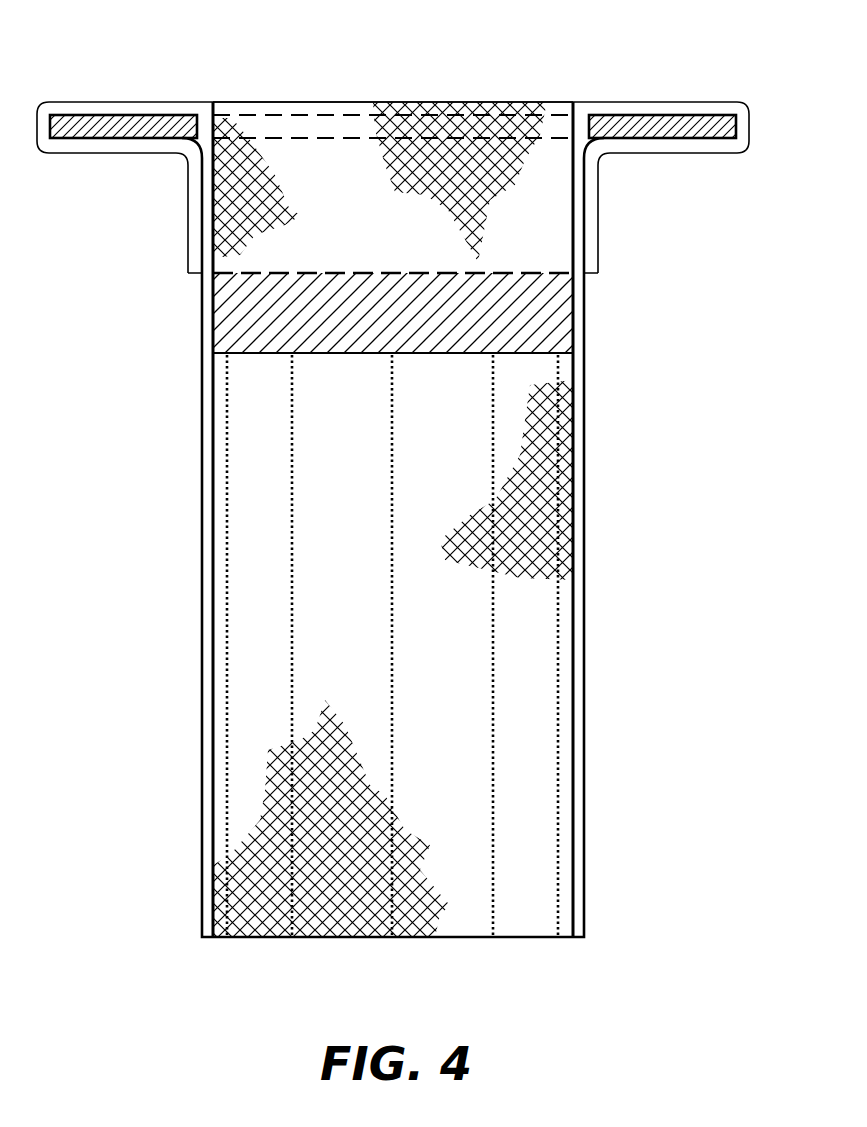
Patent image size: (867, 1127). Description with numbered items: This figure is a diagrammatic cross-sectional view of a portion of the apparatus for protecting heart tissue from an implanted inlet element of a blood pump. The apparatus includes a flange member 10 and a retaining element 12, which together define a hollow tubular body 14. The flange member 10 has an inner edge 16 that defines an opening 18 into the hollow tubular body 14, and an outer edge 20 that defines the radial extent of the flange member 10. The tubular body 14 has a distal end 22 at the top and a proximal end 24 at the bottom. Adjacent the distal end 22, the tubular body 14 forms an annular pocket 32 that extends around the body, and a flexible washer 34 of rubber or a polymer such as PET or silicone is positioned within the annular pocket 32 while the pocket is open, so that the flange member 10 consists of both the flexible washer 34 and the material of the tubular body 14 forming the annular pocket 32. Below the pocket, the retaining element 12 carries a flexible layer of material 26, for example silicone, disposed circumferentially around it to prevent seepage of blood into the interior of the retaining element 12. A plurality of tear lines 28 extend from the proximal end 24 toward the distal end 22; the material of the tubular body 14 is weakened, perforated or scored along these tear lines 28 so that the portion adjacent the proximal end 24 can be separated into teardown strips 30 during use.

The flange member 10 is at (413, 515).
The retaining element 12 is at (567, 805).
The hollow tubular body 14 is at (585, 712).
The inner edge 16 is at (574, 100).
The opening 18 is at (273, 100).
The outer edge 20 is at (676, 120).
The distal end 22 is at (345, 100).
The proximal end 24 is at (305, 937).
The flexible layer of material 26 is at (512, 302).
The tear lines 28 is at (392, 513).
The teardown strips 30 is at (493, 937).
The annular pocket 32 is at (708, 140).
The flexible washer 34 is at (648, 115).